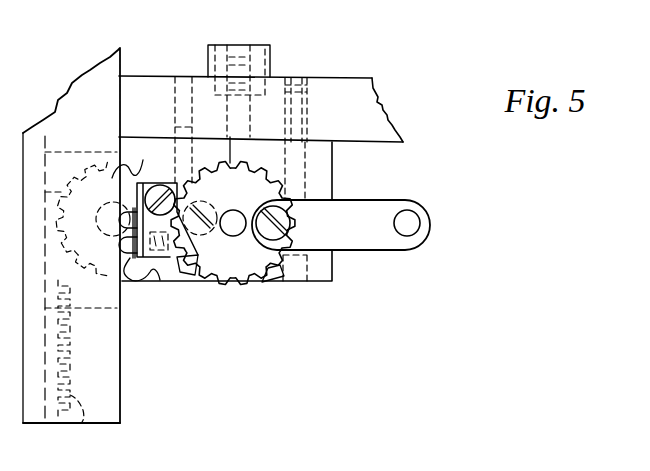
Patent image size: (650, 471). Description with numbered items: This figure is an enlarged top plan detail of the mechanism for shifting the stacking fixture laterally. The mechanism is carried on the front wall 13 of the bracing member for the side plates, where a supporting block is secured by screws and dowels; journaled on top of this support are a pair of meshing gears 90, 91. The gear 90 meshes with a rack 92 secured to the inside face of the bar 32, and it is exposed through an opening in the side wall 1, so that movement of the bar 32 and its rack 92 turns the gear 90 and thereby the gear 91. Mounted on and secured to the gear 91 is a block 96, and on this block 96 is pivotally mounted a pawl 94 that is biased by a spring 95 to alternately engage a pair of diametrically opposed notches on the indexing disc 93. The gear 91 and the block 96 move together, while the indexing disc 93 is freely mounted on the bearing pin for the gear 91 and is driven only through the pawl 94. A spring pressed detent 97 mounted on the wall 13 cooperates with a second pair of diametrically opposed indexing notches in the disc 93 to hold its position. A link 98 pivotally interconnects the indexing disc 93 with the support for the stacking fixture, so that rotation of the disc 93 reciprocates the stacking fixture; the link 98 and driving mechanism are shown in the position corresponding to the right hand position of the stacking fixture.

The side wall 1 is at (108, 398).
The front wall 13 is at (352, 83).
The bar 32 is at (53, 134).
The gear 90 is at (152, 272).
The gear 91 is at (242, 284).
The rack 92 is at (84, 415).
The indexing disc 93 is at (266, 266).
The pawl 94 is at (182, 272).
The spring 95 is at (128, 272).
The block 96 is at (145, 183).
The spring pressed detent 97 is at (238, 166).
The link 98 is at (377, 250).